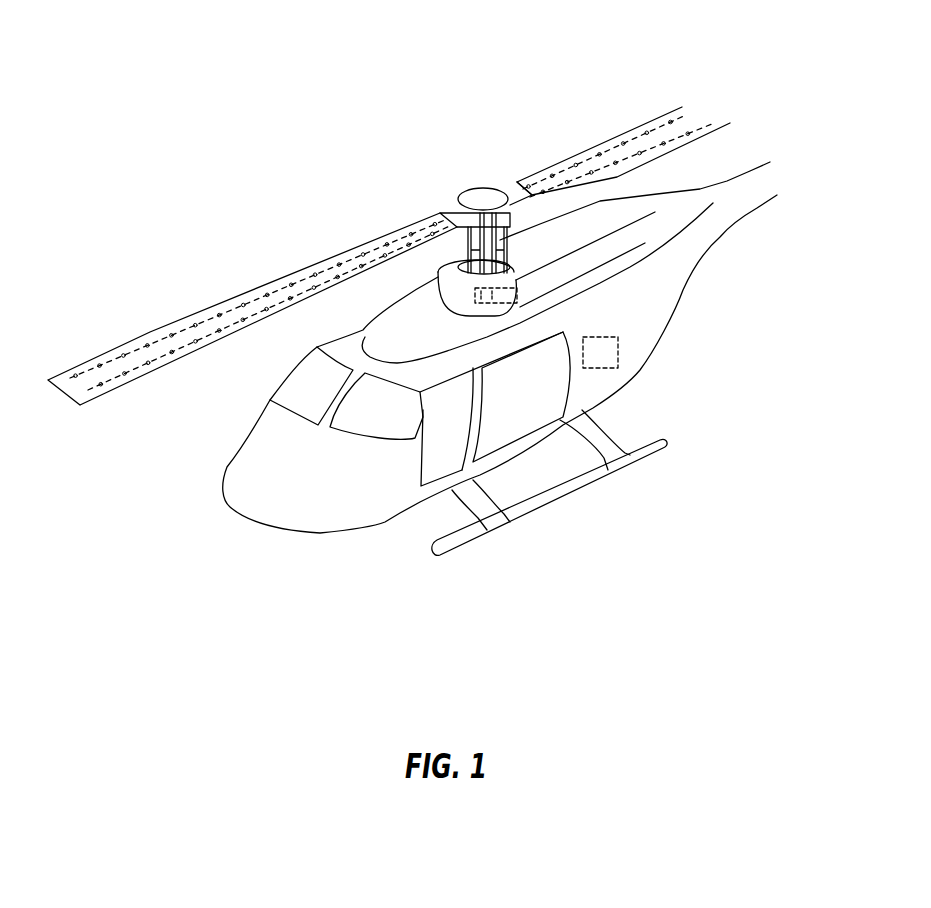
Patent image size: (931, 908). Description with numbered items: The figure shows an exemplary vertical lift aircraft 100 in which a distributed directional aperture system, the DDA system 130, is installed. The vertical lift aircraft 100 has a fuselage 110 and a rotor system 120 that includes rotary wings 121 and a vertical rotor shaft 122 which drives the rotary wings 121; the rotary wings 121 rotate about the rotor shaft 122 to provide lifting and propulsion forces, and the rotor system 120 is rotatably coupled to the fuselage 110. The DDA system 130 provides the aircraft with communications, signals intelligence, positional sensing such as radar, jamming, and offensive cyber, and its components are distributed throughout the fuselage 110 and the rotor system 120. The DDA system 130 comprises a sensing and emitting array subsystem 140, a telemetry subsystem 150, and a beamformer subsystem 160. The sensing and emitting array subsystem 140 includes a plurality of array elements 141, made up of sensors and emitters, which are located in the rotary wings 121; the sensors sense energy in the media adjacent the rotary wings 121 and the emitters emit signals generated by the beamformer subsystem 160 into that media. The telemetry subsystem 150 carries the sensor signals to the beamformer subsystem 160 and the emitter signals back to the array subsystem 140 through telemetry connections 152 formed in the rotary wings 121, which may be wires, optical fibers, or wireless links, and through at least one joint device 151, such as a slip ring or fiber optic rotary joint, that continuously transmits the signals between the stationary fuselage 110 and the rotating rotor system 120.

The vertical lift aircraft 100 is at (151, 100).
The fuselage 110 is at (395, 497).
The rotor system 120 is at (432, 131).
The rotary wings 121 is at (355, 247).
The vertical rotor shaft 122 is at (487, 227).
The DDA system 130 is at (729, 432).
The sensing and emitting array subsystem 140 is at (177, 198).
The array elements 141 is at (100, 364).
The telemetry subsystem 150 is at (770, 317).
The joint device 151 is at (518, 293).
The telemetry connections 152 is at (180, 362).
The beamformer subsystem 160 is at (618, 351).